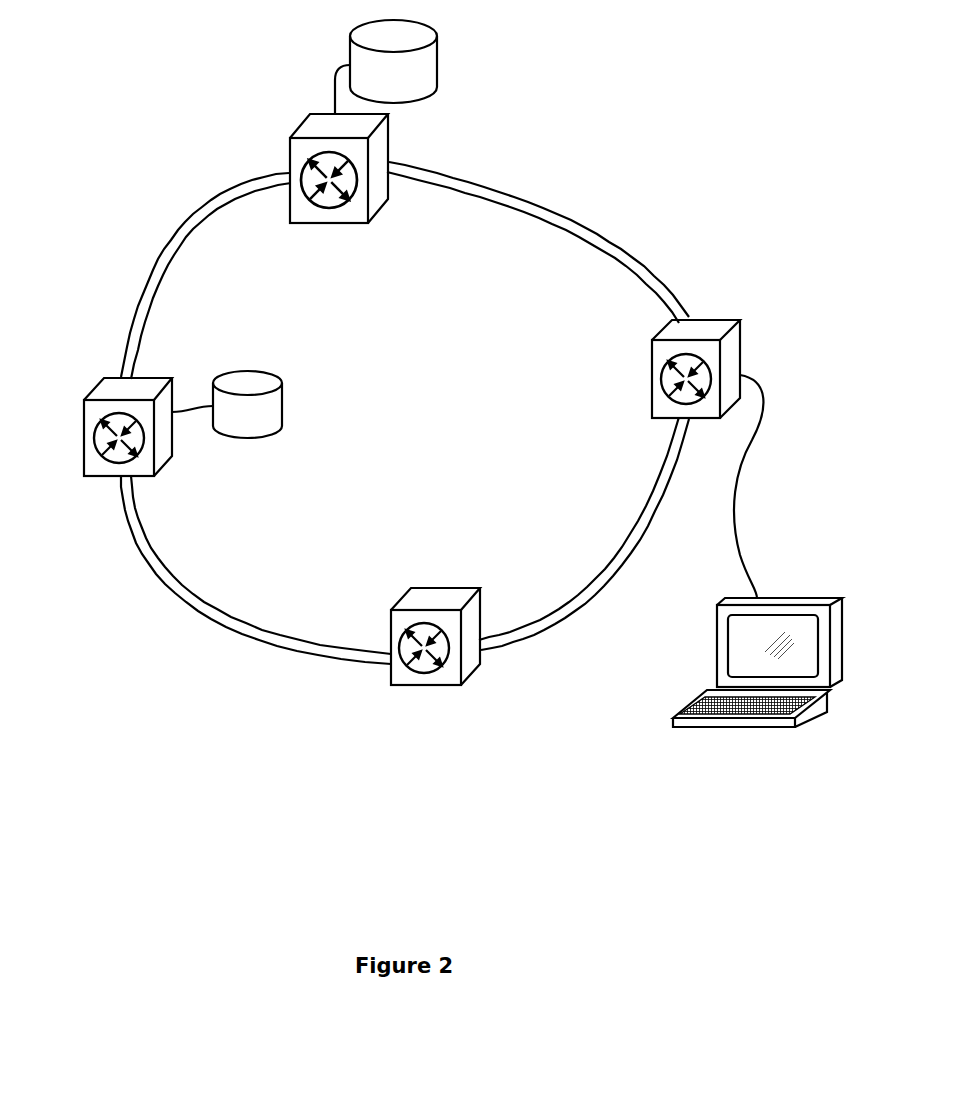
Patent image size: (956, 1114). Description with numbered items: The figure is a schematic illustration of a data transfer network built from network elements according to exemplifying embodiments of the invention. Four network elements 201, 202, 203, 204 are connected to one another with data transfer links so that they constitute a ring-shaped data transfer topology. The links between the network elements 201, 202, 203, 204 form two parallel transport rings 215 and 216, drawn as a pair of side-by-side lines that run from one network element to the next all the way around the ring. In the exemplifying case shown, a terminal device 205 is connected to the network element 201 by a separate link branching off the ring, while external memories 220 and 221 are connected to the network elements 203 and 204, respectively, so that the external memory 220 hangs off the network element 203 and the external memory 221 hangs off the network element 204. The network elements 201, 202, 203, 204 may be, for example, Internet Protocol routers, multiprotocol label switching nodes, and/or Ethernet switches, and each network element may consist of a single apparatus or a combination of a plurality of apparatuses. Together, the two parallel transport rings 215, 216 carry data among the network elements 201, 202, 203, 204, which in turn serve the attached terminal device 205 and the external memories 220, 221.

The network element 201 is at (728, 320).
The network element 202 is at (437, 588).
The network element 203 is at (340, 224).
The network element 204 is at (95, 478).
The terminal device 205 is at (797, 598).
The transport ring 215 is at (444, 174).
The transport ring 216 is at (498, 210).
The external memory 220 is at (386, 67).
The external memory 221 is at (227, 404).